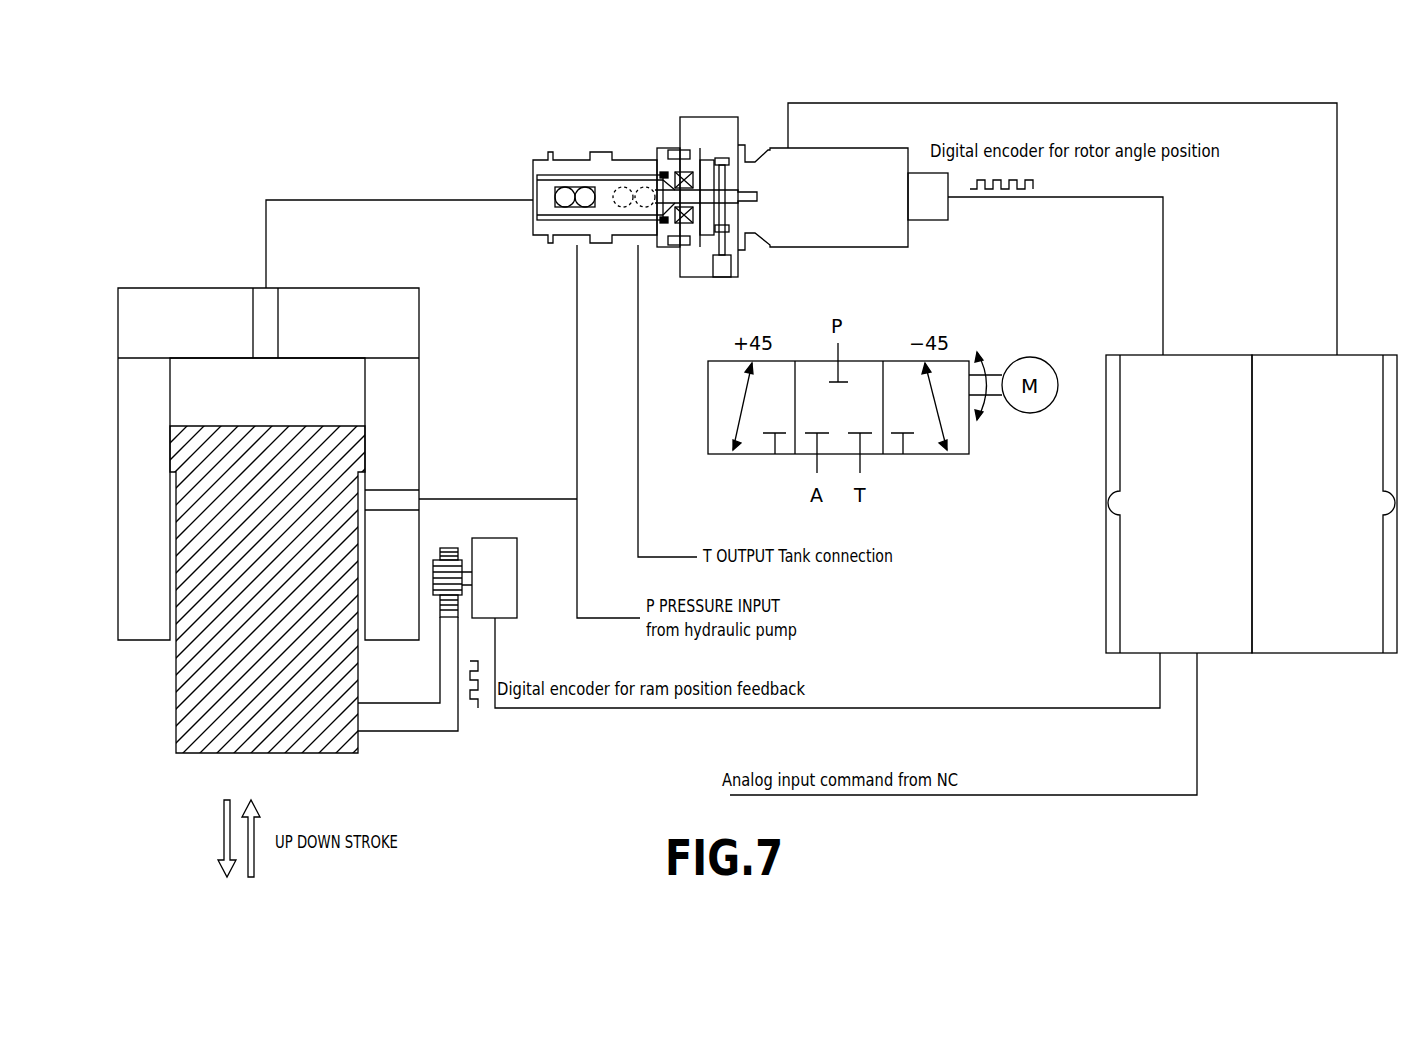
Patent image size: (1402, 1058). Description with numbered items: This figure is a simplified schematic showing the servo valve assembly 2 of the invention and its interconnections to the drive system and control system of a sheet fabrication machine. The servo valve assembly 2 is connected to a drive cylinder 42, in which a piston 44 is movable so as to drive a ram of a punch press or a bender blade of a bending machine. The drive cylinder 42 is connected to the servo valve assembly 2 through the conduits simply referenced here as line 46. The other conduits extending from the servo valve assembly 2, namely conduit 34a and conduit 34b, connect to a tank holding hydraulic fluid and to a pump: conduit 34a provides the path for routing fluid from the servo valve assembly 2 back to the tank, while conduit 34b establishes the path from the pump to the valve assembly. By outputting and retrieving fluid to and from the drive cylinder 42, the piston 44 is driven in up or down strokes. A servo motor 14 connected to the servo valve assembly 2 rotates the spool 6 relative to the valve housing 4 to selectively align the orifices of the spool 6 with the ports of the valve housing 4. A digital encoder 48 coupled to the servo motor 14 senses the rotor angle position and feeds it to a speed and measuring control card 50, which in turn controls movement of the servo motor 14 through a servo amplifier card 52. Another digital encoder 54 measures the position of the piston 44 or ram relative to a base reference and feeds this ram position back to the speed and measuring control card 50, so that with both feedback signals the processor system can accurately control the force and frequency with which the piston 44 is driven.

The servo valve assembly 2 is at (636, 151).
The valve housing 4 is at (594, 152).
The spool 6 is at (568, 175).
The servo motor 14 is at (846, 206).
The conduit 34a is at (638, 360).
The conduit 34b is at (577, 340).
The drive cylinder 42 is at (145, 288).
The piston 44 is at (176, 703).
The line 46 is at (400, 200).
The digital encoder 48 is at (933, 220).
The speed and measuring control card 50 is at (1174, 612).
The servo amplifier card 52 is at (1307, 612).
The digital encoder 54 is at (490, 538).